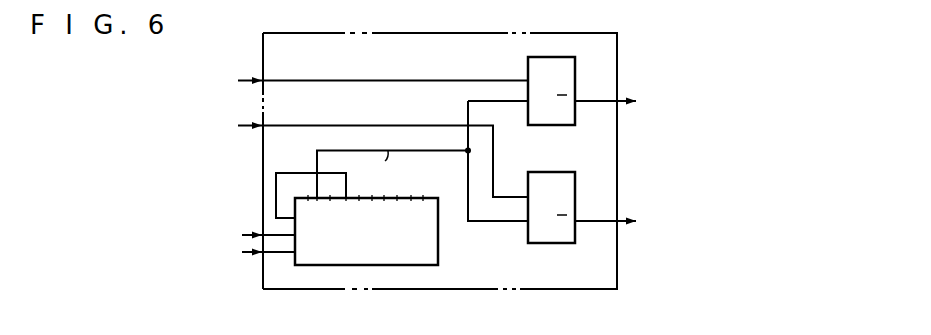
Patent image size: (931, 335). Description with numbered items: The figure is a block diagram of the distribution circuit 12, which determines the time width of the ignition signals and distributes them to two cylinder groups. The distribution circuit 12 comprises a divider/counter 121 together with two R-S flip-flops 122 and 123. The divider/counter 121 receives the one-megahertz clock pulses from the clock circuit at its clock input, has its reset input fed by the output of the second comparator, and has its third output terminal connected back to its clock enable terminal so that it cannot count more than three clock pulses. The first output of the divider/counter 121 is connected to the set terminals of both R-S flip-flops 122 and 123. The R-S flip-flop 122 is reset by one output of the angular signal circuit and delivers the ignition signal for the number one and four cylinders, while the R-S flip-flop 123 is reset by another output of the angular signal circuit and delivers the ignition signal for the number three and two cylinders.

The distribution circuit 12 is at (617, 58).
The divider/counter 121 is at (371, 265).
The R-S flip-flop 122 is at (553, 125).
The R-S flip-flop 123 is at (546, 243).